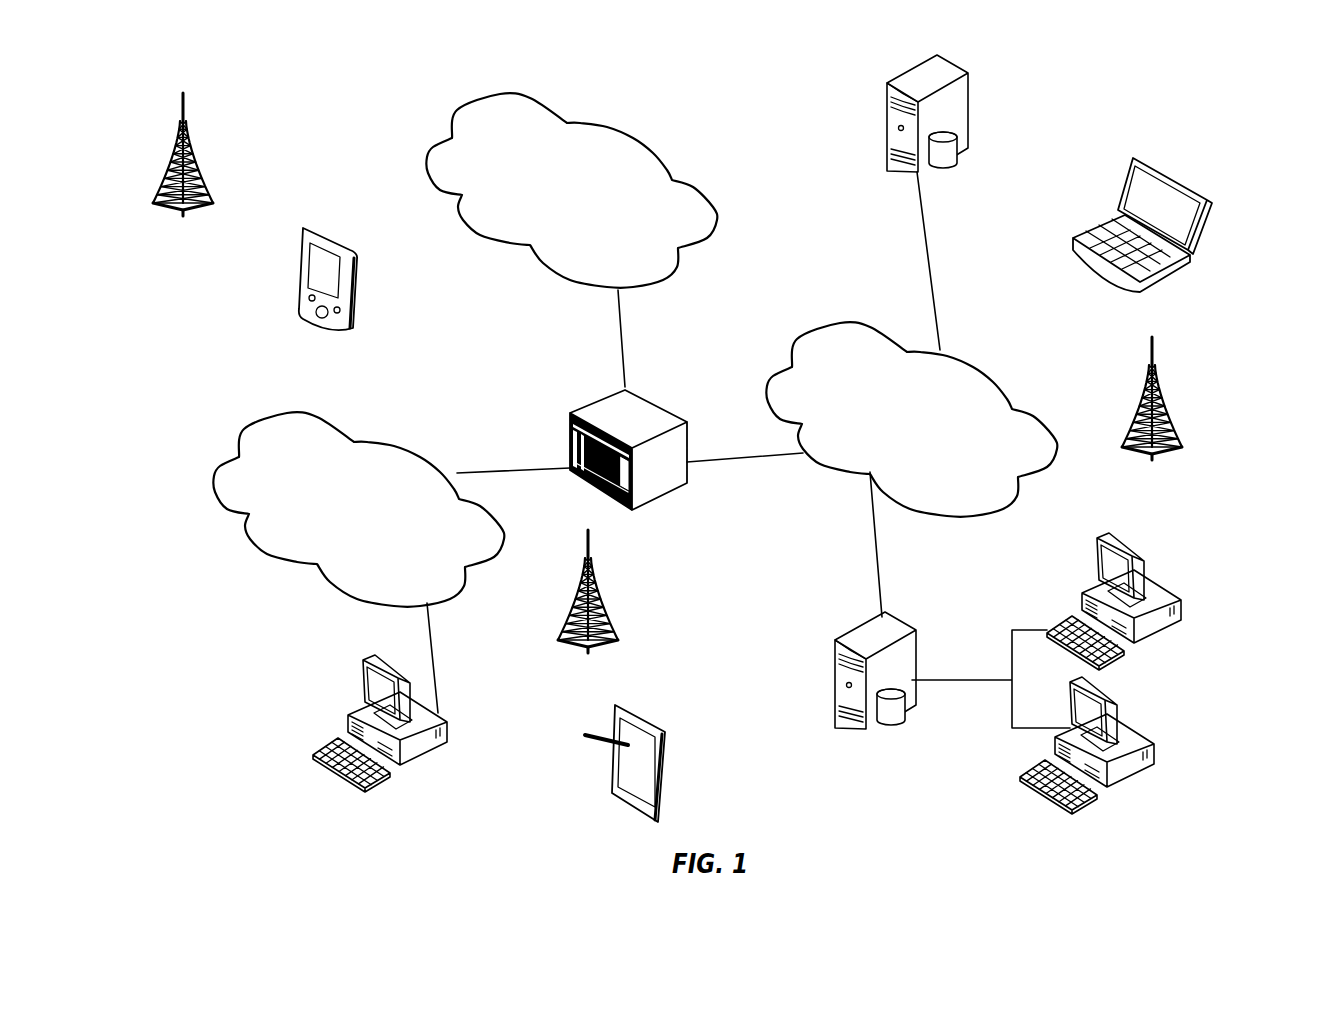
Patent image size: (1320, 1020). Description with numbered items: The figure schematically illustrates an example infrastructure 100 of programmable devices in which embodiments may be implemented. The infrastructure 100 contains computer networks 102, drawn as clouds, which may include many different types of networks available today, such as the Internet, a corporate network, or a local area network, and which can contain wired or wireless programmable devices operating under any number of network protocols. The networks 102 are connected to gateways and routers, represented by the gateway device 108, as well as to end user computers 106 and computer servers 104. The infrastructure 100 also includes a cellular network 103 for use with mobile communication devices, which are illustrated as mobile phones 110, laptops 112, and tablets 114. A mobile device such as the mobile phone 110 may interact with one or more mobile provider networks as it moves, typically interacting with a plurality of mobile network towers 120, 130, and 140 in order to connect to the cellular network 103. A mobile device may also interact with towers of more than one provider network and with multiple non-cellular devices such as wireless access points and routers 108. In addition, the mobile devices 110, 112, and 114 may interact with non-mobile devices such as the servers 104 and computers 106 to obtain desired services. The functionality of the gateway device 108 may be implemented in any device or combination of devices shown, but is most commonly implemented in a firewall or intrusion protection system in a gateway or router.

The infrastructure 100 is at (1060, 143).
The computer networks 102 is at (348, 425).
The cellular network 103 is at (617, 127).
The computer servers 104 is at (892, 107).
The end user computers 106 is at (1143, 560).
The gateways and routers 108 is at (652, 401).
The mobile phones 110 is at (338, 235).
The laptops 112 is at (1183, 183).
The tablets 114 is at (650, 720).
The mobile network tower 120 is at (588, 608).
The mobile network tower 130 is at (1152, 415).
The mobile network tower 140 is at (183, 171).